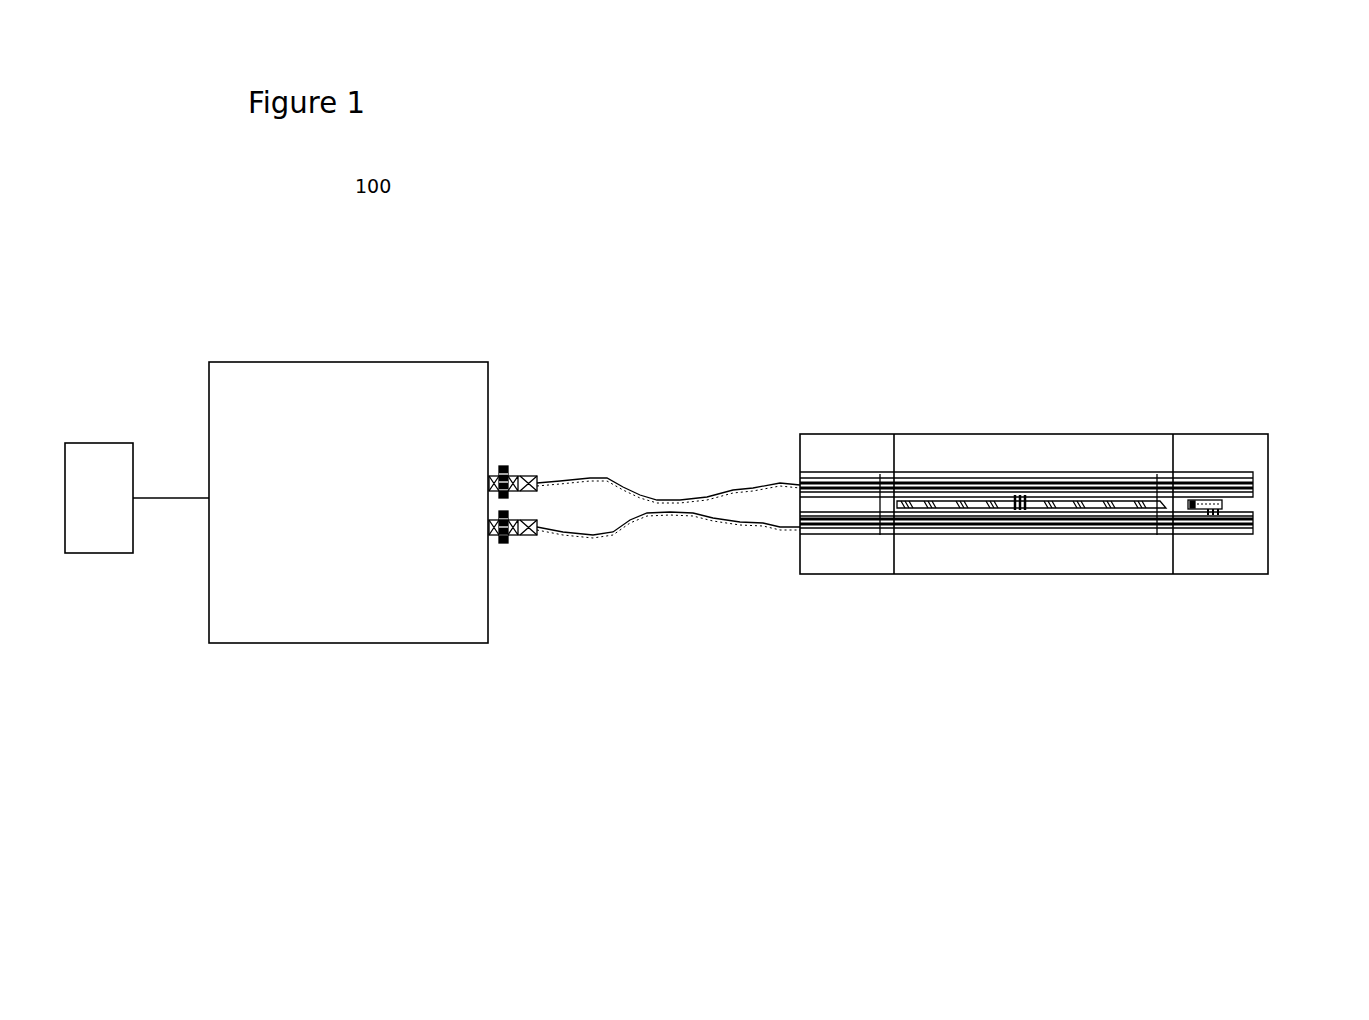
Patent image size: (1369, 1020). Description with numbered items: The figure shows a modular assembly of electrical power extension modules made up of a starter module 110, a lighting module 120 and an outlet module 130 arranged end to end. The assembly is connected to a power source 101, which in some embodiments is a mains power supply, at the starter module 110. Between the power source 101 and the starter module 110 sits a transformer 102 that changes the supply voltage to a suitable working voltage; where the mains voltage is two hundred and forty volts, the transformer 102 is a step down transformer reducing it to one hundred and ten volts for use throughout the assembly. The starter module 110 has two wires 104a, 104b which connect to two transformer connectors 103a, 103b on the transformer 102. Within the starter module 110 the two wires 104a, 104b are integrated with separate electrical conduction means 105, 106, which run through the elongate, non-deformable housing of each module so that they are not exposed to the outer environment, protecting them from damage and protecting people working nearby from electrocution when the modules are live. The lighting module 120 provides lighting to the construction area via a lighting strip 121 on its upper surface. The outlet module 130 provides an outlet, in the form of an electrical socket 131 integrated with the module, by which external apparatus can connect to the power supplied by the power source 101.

The power source 101 is at (111, 467).
The transformer 102 is at (354, 474).
The transformer connector 103a is at (525, 477).
The transformer connector 103b is at (520, 533).
The wire 104a is at (744, 490).
The wire 104b is at (742, 530).
The electrical conduction means 105 is at (833, 473).
The electrical conduction means 106 is at (843, 533).
The starter module 110 is at (865, 447).
The lighting module 120 is at (1059, 457).
The lighting strip 121 is at (989, 528).
The outlet module 130 is at (1226, 457).
The electrical socket 131 is at (1222, 530).